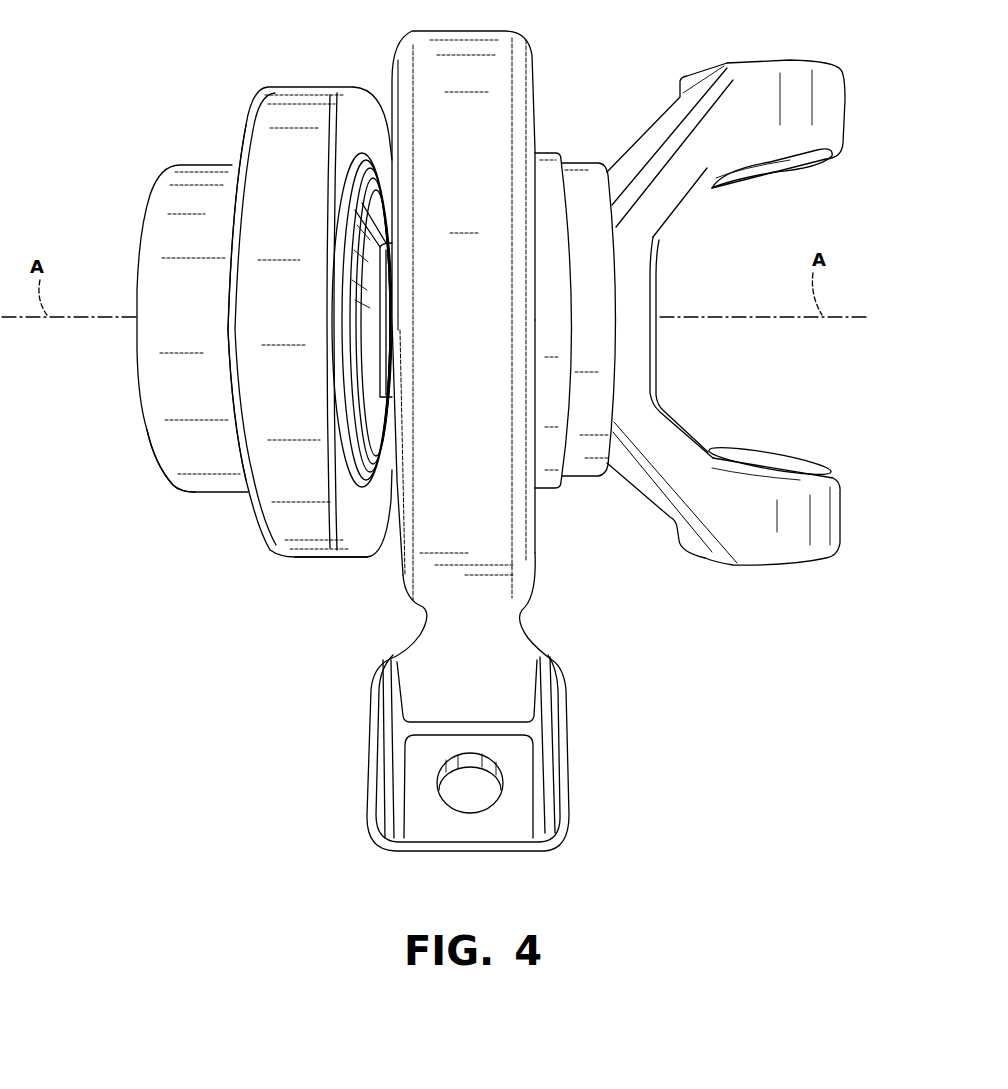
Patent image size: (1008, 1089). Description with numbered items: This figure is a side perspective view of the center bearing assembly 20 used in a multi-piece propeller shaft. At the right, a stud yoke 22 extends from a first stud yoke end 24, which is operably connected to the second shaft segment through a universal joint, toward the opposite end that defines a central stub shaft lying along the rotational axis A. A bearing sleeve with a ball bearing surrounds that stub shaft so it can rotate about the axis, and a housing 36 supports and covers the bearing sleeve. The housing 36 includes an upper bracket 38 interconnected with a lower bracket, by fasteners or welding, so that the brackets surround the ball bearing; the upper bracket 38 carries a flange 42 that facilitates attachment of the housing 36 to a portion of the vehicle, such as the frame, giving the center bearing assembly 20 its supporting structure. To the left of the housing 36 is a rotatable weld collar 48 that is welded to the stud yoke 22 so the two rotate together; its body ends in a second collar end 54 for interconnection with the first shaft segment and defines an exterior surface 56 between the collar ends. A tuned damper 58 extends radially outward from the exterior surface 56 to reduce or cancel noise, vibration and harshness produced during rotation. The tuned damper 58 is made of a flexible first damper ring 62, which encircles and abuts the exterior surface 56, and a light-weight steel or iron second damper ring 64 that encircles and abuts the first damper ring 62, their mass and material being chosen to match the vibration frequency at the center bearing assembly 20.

The center bearing assembly 20 is at (793, 658).
The stud yoke 22 is at (680, 414).
The first stud yoke end 24 is at (840, 508).
The housing 36 is at (406, 578).
The upper bracket 38 is at (535, 107).
The flange 42 is at (566, 774).
The rotatable weld collar 48 is at (223, 494).
The second collar end 54 is at (162, 461).
The exterior surface 56 is at (176, 362).
The tuned damper 58 is at (300, 520).
The first damper ring 62 is at (384, 152).
The second damper ring 64 is at (247, 124).